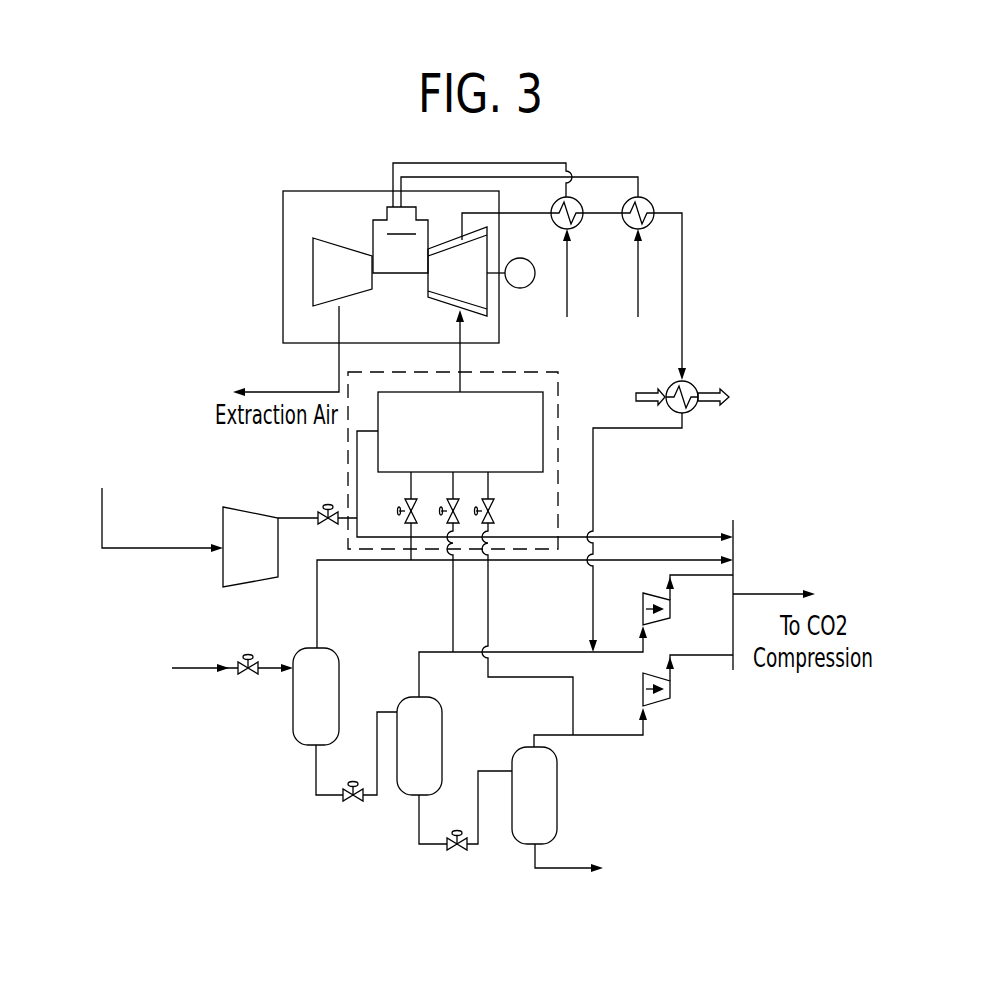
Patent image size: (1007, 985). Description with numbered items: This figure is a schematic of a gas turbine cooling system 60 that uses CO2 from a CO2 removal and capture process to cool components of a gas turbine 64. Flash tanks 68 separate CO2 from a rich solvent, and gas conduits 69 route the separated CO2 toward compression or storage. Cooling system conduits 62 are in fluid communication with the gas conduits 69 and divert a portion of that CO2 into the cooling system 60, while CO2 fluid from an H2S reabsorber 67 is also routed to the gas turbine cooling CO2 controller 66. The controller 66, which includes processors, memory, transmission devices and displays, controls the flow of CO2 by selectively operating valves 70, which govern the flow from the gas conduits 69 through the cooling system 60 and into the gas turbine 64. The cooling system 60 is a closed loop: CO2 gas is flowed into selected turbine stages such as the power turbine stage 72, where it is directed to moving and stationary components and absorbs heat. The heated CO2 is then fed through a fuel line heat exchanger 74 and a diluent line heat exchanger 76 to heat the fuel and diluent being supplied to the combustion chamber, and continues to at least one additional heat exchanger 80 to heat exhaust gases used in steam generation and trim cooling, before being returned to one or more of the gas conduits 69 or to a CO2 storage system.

The cooling system 60 is at (348, 451).
The conduits 62 is at (492, 483).
The gas turbine 64 is at (374, 268).
The gas turbine cooling CO2 controller 66 is at (556, 410).
The H2S reabsorber 67 is at (250, 517).
The flash tanks 68 is at (305, 711).
The gas conduits 69 is at (342, 562).
The valves 70 is at (492, 510).
The power turbine stage 72 is at (483, 297).
The fuel line heat exchanger 74 is at (583, 225).
The diluent line heat exchanger 76 is at (649, 225).
The additional heat exchanger 80 is at (693, 415).